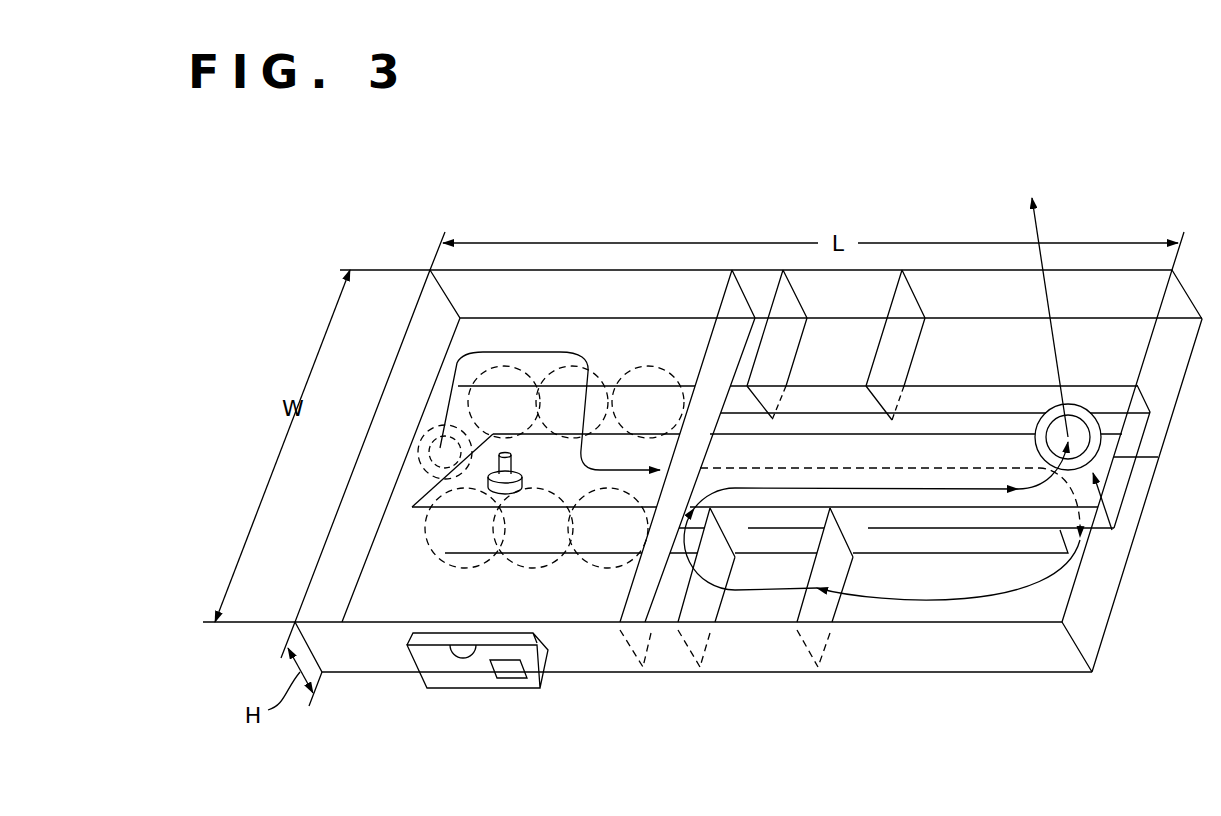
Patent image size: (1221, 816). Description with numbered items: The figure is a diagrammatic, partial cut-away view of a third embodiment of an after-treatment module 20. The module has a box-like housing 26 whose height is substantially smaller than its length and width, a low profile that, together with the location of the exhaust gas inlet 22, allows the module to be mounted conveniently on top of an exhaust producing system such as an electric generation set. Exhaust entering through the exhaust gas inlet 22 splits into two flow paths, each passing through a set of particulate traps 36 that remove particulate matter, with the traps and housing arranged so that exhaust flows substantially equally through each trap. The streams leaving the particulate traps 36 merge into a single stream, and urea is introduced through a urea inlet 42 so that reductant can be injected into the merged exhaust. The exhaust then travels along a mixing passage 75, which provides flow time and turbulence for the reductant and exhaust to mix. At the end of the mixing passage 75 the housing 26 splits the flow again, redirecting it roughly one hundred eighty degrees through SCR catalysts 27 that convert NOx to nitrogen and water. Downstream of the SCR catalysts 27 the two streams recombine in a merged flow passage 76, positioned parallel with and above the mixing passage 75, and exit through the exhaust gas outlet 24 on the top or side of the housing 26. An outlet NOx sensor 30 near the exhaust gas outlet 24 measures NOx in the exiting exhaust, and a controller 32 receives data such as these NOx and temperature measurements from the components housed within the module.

The after-treatment module 20 is at (1197, 262).
The exhaust gas inlet 22 is at (420, 448).
The exhaust gas outlet 24 is at (1115, 528).
The housing 26 is at (1088, 625).
The SCR catalyst 27 is at (825, 364).
The outlet NOx sensor 30 is at (1152, 456).
The controller 32 is at (510, 680).
The particulate traps 36 is at (607, 377).
The urea inlet 42 is at (514, 458).
The mixing passage 75 is at (958, 543).
The merged flow passage 76 is at (905, 518).